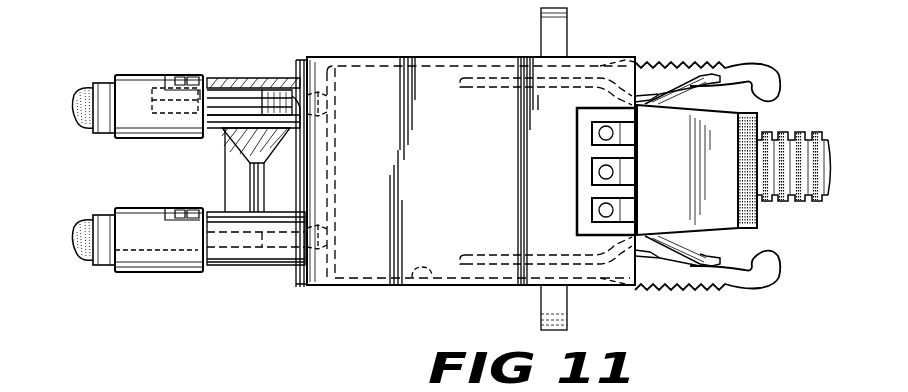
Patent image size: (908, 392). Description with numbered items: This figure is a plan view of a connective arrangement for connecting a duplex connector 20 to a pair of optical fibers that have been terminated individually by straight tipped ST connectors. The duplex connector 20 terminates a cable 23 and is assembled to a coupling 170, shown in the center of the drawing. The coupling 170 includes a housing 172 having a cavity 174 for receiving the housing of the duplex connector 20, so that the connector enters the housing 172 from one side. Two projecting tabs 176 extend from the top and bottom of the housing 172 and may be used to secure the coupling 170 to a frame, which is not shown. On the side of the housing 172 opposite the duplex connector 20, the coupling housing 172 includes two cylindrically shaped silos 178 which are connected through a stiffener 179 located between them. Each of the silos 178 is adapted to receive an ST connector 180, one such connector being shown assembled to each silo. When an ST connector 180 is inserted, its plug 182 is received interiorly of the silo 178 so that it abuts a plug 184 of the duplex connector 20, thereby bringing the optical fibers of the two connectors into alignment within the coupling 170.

The coupling 170 is at (466, 40).
The housing 172 is at (394, 58).
The cavity 174 is at (432, 278).
The projecting tabs 176 is at (562, 44).
The silos 178 is at (228, 265).
The stiffener 179 is at (293, 190).
The ST connector 180 is at (162, 140).
The plug 182 is at (242, 98).
The plug 184 is at (276, 98).
The duplex connector 20 is at (719, 104).
The cable 23 is at (829, 141).